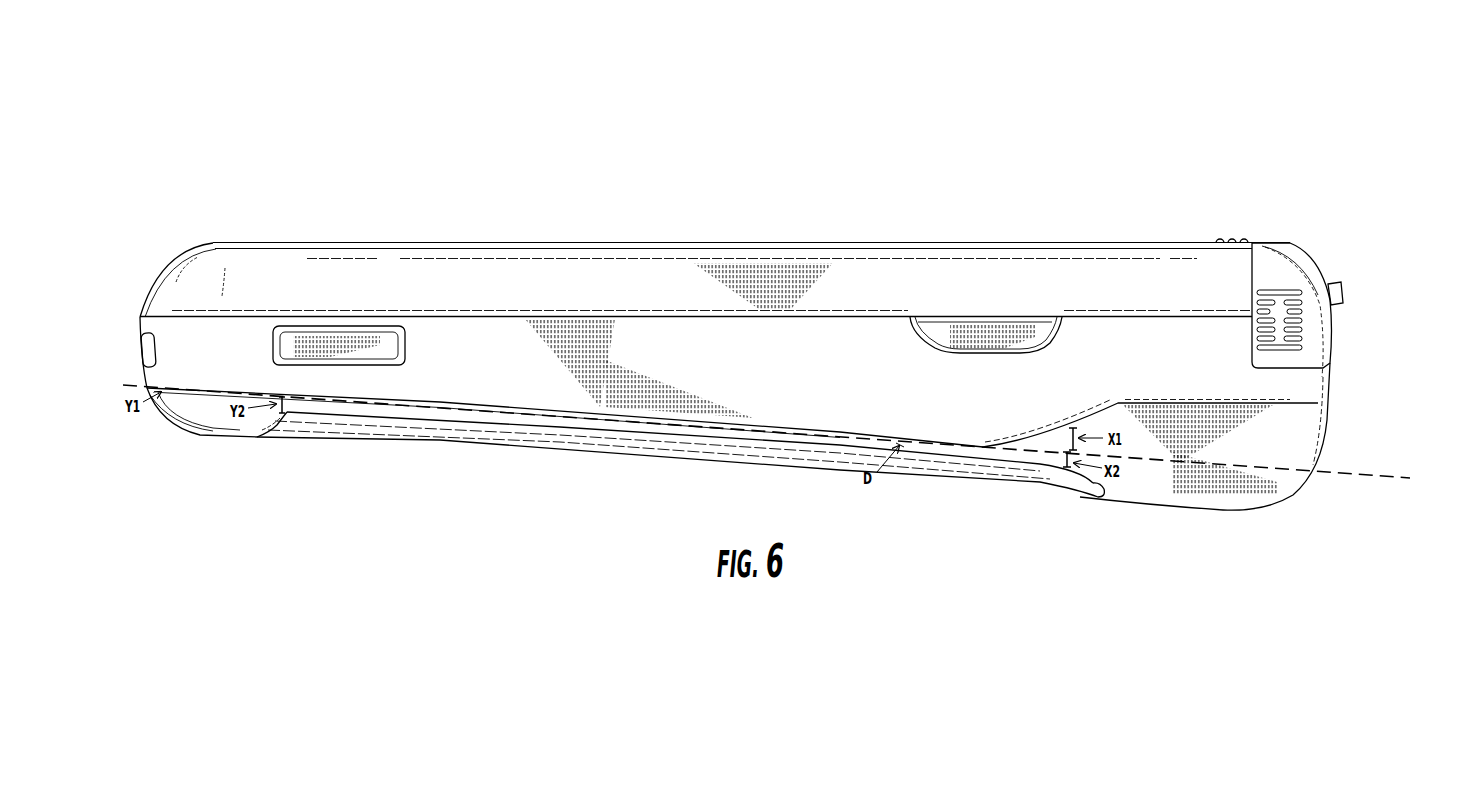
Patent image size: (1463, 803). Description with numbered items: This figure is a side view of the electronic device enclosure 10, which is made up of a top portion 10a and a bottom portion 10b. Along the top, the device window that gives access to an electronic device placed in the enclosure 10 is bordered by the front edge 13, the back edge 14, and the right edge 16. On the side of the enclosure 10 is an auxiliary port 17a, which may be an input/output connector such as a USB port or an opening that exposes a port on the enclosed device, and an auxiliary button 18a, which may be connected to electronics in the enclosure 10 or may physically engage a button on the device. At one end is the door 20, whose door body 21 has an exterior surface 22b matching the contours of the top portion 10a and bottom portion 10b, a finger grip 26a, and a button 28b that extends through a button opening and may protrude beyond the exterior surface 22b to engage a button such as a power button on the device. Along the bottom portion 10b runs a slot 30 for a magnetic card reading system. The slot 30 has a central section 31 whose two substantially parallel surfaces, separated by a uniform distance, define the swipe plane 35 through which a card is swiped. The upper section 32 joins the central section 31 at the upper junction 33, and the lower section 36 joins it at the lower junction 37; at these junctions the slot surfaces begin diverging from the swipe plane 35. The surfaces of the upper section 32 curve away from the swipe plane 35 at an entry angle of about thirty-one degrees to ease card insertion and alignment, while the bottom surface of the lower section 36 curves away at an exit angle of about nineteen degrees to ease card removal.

The enclosure 10 is at (809, 122).
The top portion 10a is at (175, 277).
The bottom portion 10b is at (180, 368).
The back edge 14 is at (213, 243).
The right edge 16 is at (682, 253).
The front edge 13 is at (1232, 238).
The auxiliary port 17a is at (380, 352).
The auxiliary button 18a is at (951, 325).
The door 20 is at (1278, 245).
The door body 21 is at (1295, 270).
The exterior surface 22b is at (1313, 313).
The finger grip 26a is at (1300, 338).
The button 28b is at (1340, 293).
The slot 30 is at (670, 423).
The central section 31 is at (600, 433).
The upper section 32 is at (1045, 470).
The upper junction 33 is at (987, 463).
The swipe plane 35 is at (1367, 472).
The lower section 36 is at (278, 437).
The lower junction 37 is at (317, 423).